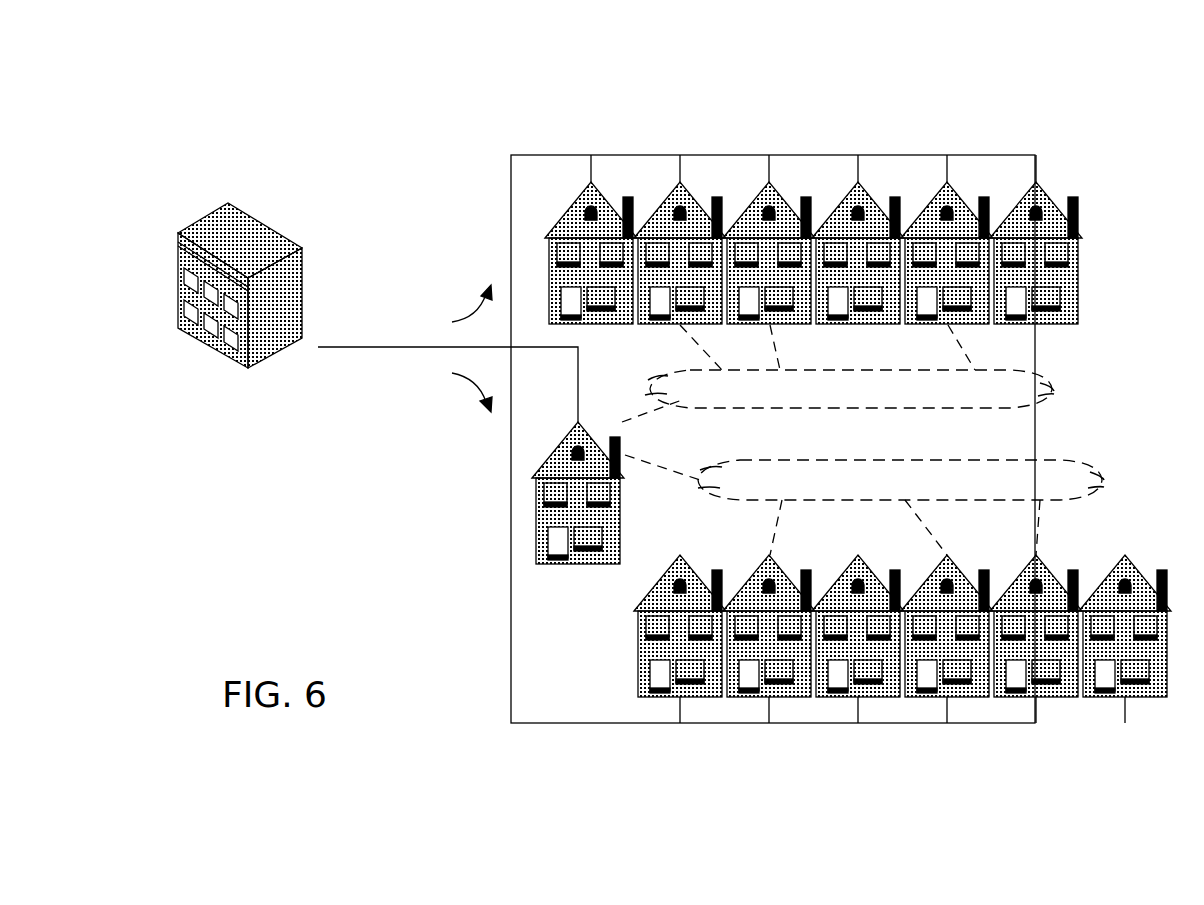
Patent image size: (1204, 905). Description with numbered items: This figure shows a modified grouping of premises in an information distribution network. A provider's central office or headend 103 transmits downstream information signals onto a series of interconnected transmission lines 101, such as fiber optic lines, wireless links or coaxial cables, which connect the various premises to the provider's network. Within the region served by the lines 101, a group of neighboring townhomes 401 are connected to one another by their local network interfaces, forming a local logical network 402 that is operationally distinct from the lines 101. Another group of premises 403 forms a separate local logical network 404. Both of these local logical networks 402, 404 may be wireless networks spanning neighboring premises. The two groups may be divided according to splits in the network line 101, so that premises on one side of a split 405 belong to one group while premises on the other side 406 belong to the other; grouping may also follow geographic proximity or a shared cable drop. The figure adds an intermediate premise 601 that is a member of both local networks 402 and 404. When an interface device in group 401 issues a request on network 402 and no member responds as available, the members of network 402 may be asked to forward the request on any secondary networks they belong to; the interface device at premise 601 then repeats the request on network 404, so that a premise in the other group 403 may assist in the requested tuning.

The transmission lines 101 is at (511, 648).
The central office 103 is at (238, 202).
The group of neighboring townhomes 401 is at (948, 135).
The local logical network 402 is at (838, 373).
The group of premises 403 is at (1037, 735).
The local logical network 404 is at (864, 505).
The side of network line split 405 is at (460, 303).
The other side of network line split 406 is at (460, 394).
The intermediate premise 601 is at (596, 563).